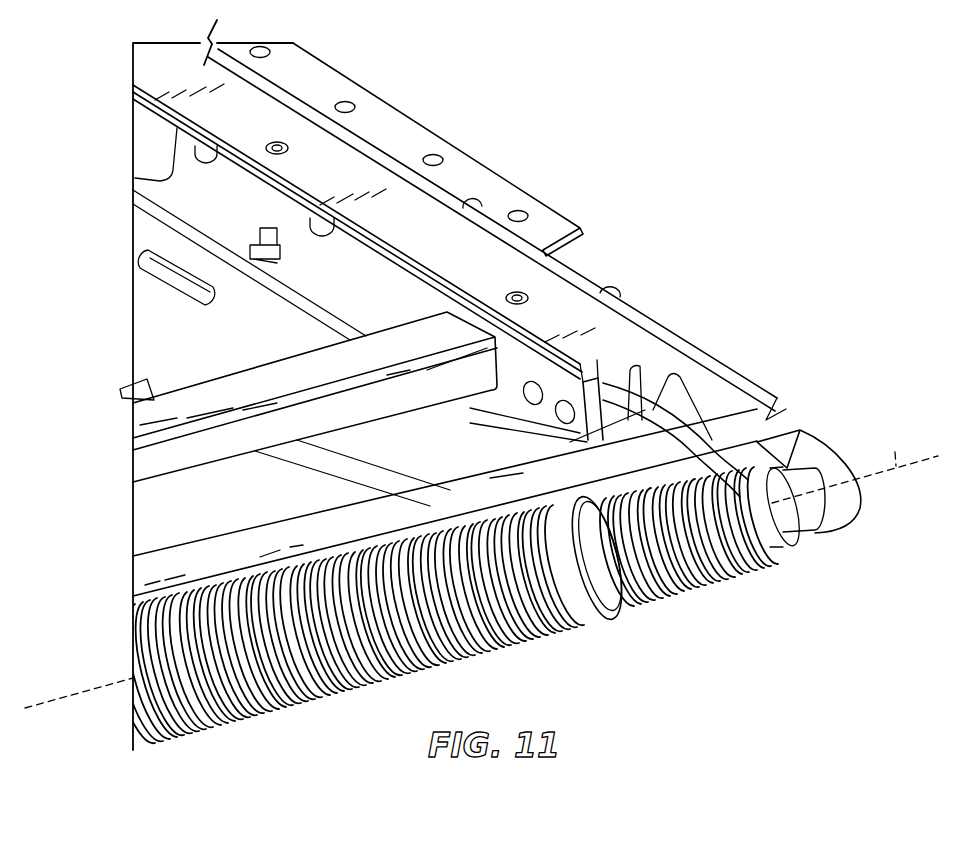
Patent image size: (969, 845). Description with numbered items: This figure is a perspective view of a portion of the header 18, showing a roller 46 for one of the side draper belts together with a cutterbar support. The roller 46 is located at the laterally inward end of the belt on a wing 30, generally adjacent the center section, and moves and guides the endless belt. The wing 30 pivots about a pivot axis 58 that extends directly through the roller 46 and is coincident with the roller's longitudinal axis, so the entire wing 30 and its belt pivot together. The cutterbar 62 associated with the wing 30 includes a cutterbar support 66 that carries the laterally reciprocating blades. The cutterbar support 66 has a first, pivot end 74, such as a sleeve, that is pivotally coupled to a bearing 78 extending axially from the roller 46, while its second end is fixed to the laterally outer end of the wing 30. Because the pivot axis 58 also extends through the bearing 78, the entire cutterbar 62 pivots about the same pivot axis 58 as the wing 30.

The header 18 is at (90, 163).
The wing 30 is at (440, 83).
The cutterbar 62 is at (538, 164).
The cutterbar support 66 is at (718, 393).
The pivot end 74 is at (814, 435).
The pivot axis 58 is at (481, 565).
The bearing 78 is at (827, 510).
The roller 46 is at (688, 613).